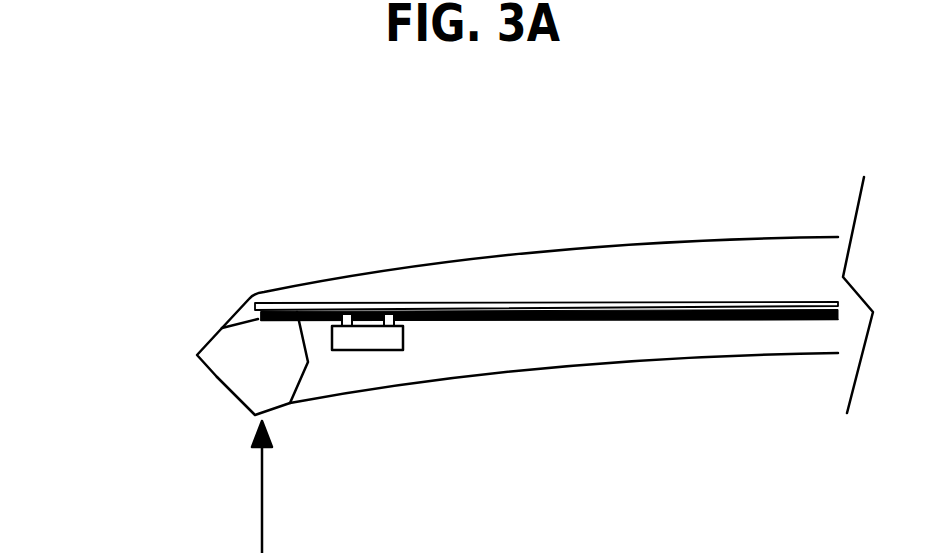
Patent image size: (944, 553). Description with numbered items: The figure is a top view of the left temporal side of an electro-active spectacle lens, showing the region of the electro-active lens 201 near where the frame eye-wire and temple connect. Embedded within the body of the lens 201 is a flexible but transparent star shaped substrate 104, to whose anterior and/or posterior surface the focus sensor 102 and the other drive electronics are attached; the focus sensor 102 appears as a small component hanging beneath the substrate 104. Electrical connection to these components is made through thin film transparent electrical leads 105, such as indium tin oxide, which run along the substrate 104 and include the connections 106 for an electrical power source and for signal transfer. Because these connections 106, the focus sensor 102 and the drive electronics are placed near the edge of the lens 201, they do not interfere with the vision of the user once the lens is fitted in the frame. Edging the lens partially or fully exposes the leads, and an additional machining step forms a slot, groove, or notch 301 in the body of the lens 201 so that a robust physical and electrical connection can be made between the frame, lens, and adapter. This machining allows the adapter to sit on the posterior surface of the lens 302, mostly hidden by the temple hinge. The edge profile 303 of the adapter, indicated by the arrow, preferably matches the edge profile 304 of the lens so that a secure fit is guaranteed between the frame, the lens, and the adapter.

The electro-active lens 201 is at (743, 236).
The posterior surface of the lens 302 is at (543, 368).
The flexible transparent star shaped substrate 104 is at (606, 304).
The connections for an electrical power source 106 is at (297, 312).
The thin film transparent electrical leads 105 is at (735, 320).
The focus sensor 102 is at (368, 337).
The slot, groove, or notch 301 is at (238, 338).
The edge profile of the lens 304 is at (144, 352).
The edge profile of the adapter 303 is at (361, 487).